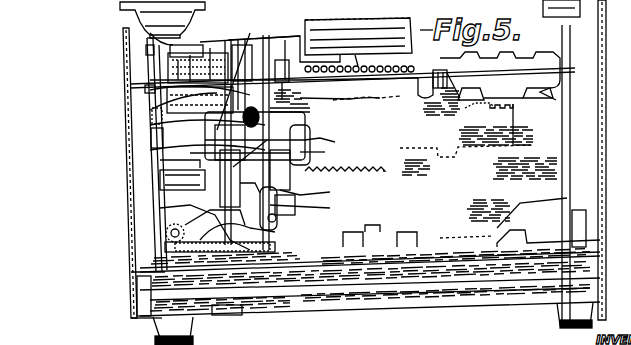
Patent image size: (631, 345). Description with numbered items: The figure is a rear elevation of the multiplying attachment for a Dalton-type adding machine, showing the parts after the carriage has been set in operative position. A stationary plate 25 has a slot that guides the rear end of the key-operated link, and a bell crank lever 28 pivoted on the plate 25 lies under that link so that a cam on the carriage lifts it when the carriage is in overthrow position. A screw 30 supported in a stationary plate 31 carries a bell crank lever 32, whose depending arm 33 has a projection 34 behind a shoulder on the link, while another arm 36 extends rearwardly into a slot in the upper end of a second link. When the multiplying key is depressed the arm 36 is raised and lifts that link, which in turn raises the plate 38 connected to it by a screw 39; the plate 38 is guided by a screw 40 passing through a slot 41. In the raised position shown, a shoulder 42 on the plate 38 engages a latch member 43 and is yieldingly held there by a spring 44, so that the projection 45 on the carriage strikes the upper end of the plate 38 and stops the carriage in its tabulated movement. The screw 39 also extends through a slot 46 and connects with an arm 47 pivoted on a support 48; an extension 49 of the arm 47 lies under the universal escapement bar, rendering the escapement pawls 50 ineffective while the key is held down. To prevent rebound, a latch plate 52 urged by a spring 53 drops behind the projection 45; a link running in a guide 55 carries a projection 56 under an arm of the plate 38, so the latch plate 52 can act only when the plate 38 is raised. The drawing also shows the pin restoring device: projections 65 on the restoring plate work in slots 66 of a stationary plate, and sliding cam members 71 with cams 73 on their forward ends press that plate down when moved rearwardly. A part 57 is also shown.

The stationary plate 25 is at (272, 55).
The bell crank lever 28 is at (154, 113).
The screw 30 is at (150, 61).
The stationary plate 31 is at (149, 42).
The bell crank lever 32 is at (195, 44).
The depending arm 33 is at (150, 52).
The projection 34 is at (152, 140).
The arm 36 is at (236, 42).
The plate 38 is at (325, 137).
The screw 39 is at (250, 228).
The screw 40 is at (323, 152).
The slot 41 is at (345, 165).
The shoulder 42 is at (292, 180).
The latch member 43 is at (170, 183).
The spring 44 is at (318, 186).
The projection 45 is at (215, 218).
The slot 46 is at (330, 106).
The arm 47 is at (162, 208).
The support 48 is at (168, 231).
The extension 49 is at (313, 205).
The pawls 50 is at (300, 272).
The latch plate 52 is at (222, 140).
The spring 53 is at (210, 112).
The guide 55 is at (165, 165).
The projection 56 is at (220, 250).
The clip 57 is at (146, 91).
The projections 65 is at (276, 91).
The slots 66 is at (300, 105).
The sliding members 71 is at (247, 66).
The cams 73 is at (372, 232).